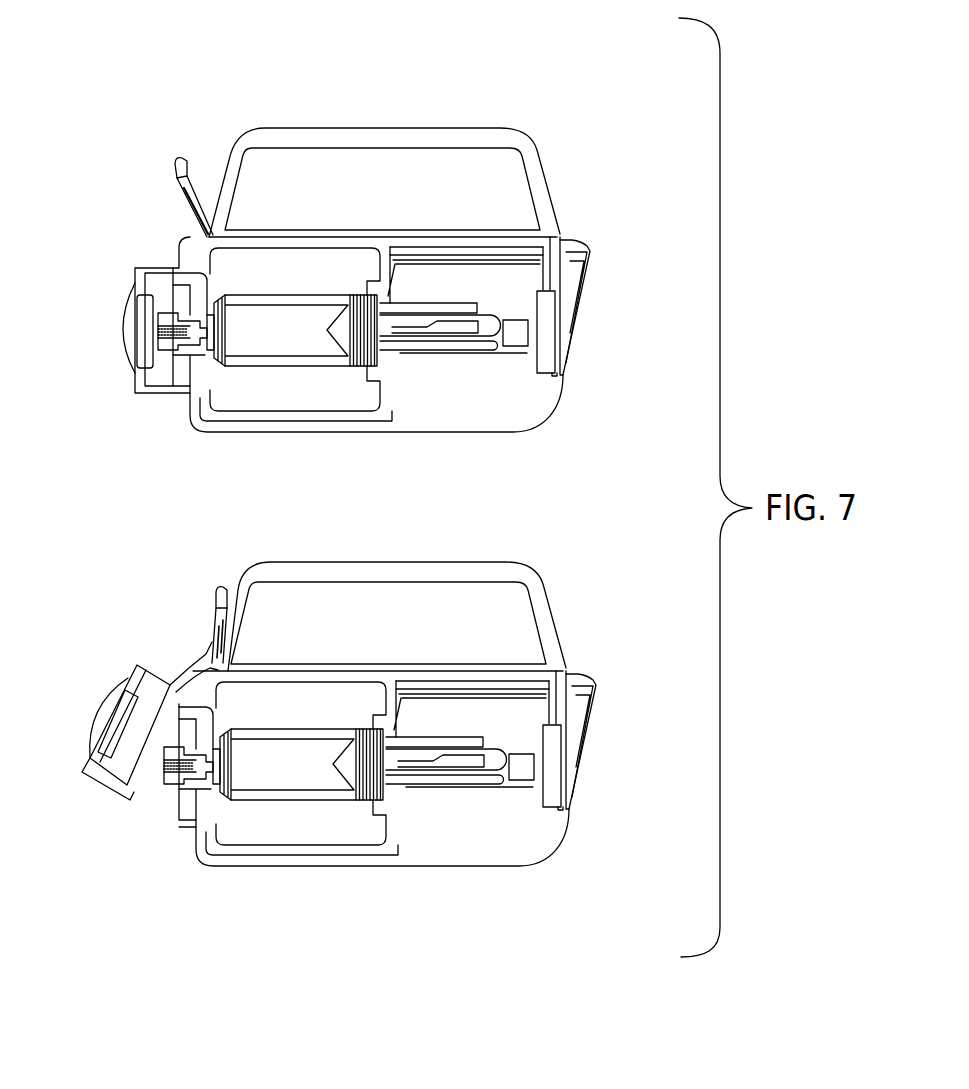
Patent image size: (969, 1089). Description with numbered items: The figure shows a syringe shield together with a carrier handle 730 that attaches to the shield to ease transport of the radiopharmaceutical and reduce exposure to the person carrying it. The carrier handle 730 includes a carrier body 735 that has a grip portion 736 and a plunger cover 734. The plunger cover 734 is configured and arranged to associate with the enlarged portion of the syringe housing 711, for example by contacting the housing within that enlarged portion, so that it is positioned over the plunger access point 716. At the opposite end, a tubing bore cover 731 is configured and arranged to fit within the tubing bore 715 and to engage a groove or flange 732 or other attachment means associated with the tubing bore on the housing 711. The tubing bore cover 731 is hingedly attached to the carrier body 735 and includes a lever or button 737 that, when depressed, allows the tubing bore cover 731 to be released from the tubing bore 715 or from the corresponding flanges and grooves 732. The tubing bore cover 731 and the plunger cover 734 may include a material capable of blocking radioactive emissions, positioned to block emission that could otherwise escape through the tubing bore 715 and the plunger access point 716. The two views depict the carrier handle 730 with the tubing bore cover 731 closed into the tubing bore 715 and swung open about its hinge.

The carrier handle 730 is at (478, 100).
The grip portion 736 is at (330, 140).
The lever or button 737 is at (198, 168).
The carrier body 735 is at (360, 245).
The plunger access point 716 is at (492, 282).
The plunger cover 734 is at (548, 330).
The syringe housing 711 is at (522, 393).
The tubing bore cover 731 is at (143, 330).
The groove, flange 732 is at (188, 388).
The tubing bore 715 is at (192, 354).